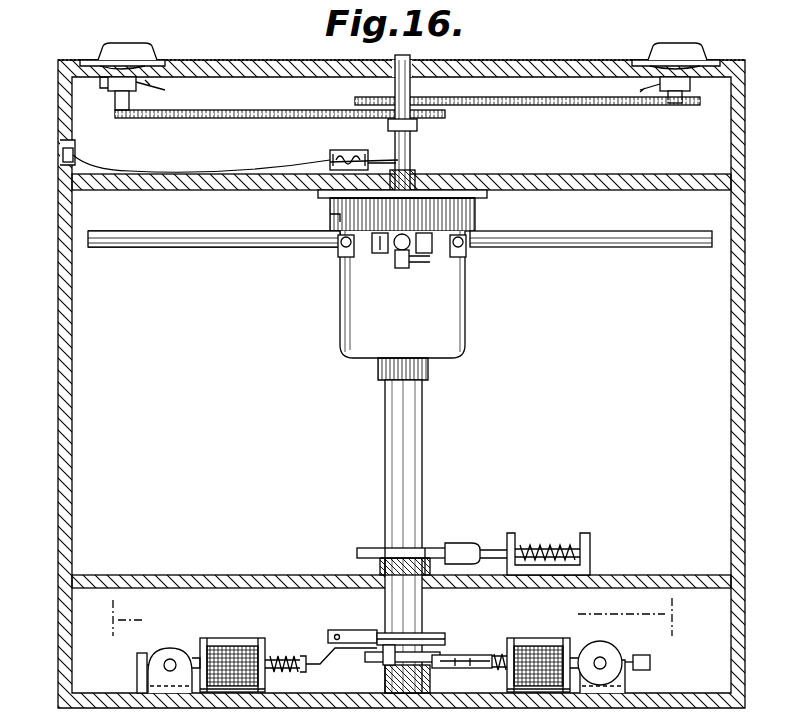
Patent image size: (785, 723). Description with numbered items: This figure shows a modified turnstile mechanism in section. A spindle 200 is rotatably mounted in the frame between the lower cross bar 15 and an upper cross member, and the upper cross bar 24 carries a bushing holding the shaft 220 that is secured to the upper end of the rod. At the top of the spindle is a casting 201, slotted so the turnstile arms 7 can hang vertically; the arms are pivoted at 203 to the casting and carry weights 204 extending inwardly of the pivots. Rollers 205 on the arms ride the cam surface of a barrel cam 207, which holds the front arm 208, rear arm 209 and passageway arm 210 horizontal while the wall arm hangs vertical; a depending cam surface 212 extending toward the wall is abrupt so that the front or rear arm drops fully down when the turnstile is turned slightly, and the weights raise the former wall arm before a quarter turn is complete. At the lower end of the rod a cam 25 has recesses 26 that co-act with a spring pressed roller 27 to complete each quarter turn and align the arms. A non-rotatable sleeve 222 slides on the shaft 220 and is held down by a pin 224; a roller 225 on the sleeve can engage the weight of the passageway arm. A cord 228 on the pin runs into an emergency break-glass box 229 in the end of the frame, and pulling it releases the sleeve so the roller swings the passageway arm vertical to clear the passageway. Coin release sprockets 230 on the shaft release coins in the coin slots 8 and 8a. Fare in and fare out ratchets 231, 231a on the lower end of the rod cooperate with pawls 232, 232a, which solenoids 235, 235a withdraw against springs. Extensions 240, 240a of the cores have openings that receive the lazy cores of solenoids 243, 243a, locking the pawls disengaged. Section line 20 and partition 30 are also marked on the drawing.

The turnstile arms 7 is at (140, 228).
The coin slot 8 is at (114, 49).
The coin slot 8a is at (684, 44).
The cross bar 15 is at (401, 384).
The section line 20 is at (393, 617).
The cross bar 24 is at (592, 52).
The cam 25 is at (357, 553).
The recesses 26 is at (392, 548).
The spring pressed roller 27 is at (462, 543).
The partition shelf 30 is at (650, 580).
The spindle 200 is at (410, 480).
The casting 201 is at (466, 332).
The pivot 203 is at (462, 250).
The weights 204 is at (430, 260).
The rollers 205 is at (338, 246).
The barrel cam 207 is at (332, 213).
The front arm 208 is at (253, 248).
The rear arm 209 is at (560, 247).
The passageway arm 210 is at (395, 250).
The depending cam surface 212 is at (345, 258).
The shaft 220 is at (411, 146).
The sleeve 222 is at (400, 196).
The pin 224 is at (398, 162).
The roller 225 is at (350, 154).
The cord 228 is at (201, 157).
The emergency break-glass box 229 is at (62, 160).
The coin release sprockets 230 is at (355, 100).
The fare in ratchet 231 is at (366, 660).
The fare out ratchet 231a is at (446, 636).
The pawl 232 is at (355, 632).
The pawl 232a is at (468, 655).
The solenoid 235 is at (240, 636).
The solenoid 235a is at (545, 646).
The extension 240 is at (137, 664).
The extension 240a is at (664, 652).
The solenoid 243 is at (172, 650).
The solenoid 243a is at (606, 652).